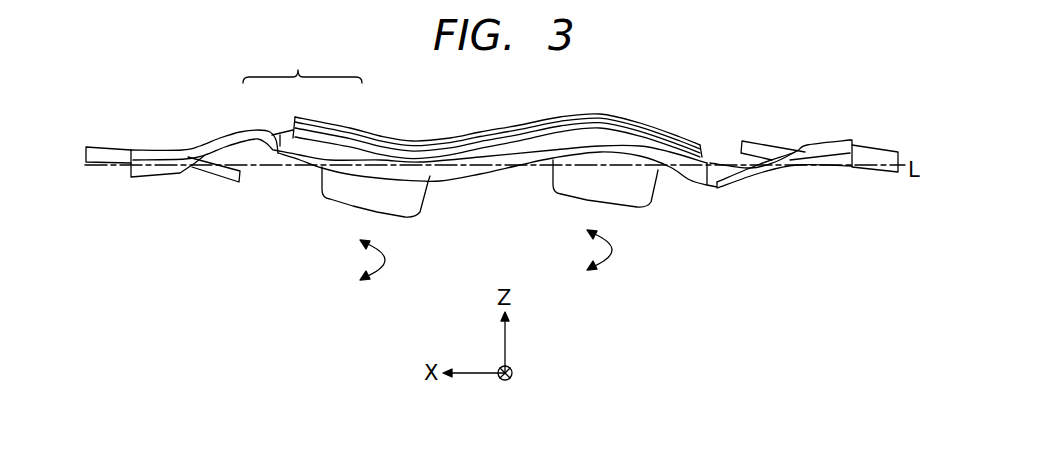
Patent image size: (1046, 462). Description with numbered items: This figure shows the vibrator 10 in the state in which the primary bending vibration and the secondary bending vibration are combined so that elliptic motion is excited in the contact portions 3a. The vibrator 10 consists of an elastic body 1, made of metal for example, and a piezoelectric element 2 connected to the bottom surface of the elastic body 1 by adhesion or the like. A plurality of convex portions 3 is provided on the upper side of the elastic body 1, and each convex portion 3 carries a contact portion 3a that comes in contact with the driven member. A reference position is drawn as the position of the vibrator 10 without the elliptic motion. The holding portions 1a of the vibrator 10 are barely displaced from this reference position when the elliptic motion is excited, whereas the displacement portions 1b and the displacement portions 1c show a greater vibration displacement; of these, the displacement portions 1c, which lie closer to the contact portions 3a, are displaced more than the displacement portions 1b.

The vibrator 10 is at (302, 63).
The elastic body 1 is at (257, 131).
The holding portions 1a is at (149, 150).
The displacement portions 1b is at (105, 167).
The displacement portions 1c is at (221, 177).
The piezoelectric element 2 is at (346, 128).
The convex portions 3 is at (323, 203).
The contact portions 3a is at (355, 210).